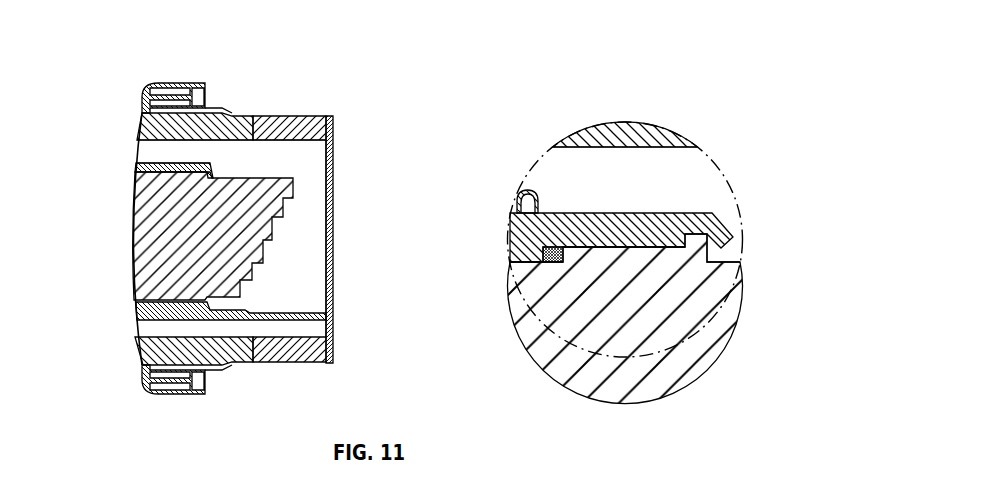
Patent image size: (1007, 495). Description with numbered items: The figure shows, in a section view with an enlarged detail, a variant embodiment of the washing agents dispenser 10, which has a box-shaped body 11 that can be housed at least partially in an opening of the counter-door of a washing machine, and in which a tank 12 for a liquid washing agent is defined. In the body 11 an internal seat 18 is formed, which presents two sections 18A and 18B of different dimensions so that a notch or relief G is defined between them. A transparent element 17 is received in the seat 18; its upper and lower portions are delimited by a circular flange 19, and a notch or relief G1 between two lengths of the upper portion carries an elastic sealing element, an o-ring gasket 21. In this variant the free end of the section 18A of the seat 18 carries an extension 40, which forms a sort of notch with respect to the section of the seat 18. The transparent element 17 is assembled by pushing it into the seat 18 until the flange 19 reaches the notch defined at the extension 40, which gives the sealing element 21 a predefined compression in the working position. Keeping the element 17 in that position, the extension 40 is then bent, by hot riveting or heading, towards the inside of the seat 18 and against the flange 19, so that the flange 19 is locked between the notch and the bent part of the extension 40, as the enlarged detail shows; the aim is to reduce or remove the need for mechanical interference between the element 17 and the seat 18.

The washing agents dispenser 10 is at (372, 101).
The box-shaped body 11 is at (603, 131).
The tank 12 is at (318, 300).
The transparent element 17 is at (130, 262).
The internal seat 18 is at (175, 161).
The section of seat 18A is at (532, 205).
The section of seat 18B is at (607, 244).
The circular flange 19 is at (740, 261).
The o-ring gasket 21 is at (552, 263).
The extension 40 is at (213, 170).
The notch or relief G is at (543, 262).
The notch or relief G1 is at (566, 262).